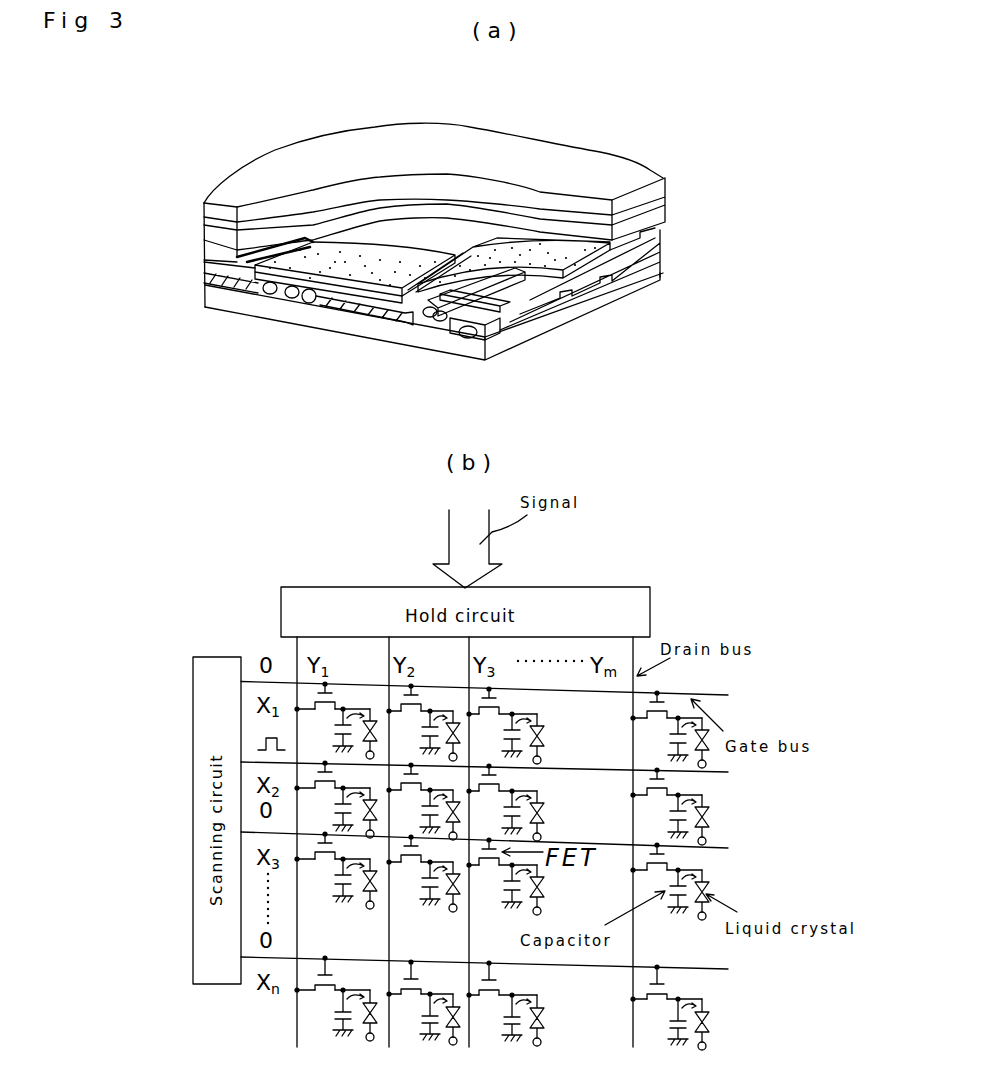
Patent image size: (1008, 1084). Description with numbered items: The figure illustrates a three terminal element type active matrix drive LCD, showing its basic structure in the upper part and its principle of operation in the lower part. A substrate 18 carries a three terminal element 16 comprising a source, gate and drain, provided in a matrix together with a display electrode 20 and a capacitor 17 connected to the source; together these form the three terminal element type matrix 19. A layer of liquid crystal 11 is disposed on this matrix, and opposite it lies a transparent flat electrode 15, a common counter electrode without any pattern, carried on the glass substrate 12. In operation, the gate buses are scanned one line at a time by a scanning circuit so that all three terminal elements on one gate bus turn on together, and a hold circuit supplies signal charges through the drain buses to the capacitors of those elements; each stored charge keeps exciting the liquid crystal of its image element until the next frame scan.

The liquid crystal 11 is at (554, 233).
The glass substrate 12 is at (385, 151).
The transparent flat electrode 15 is at (447, 195).
The three terminal element 16 is at (292, 304).
The capacitor 17 is at (402, 333).
The substrate 18 is at (554, 328).
The three terminal element type matrix 19 is at (671, 284).
The display electrode 20 is at (315, 248).